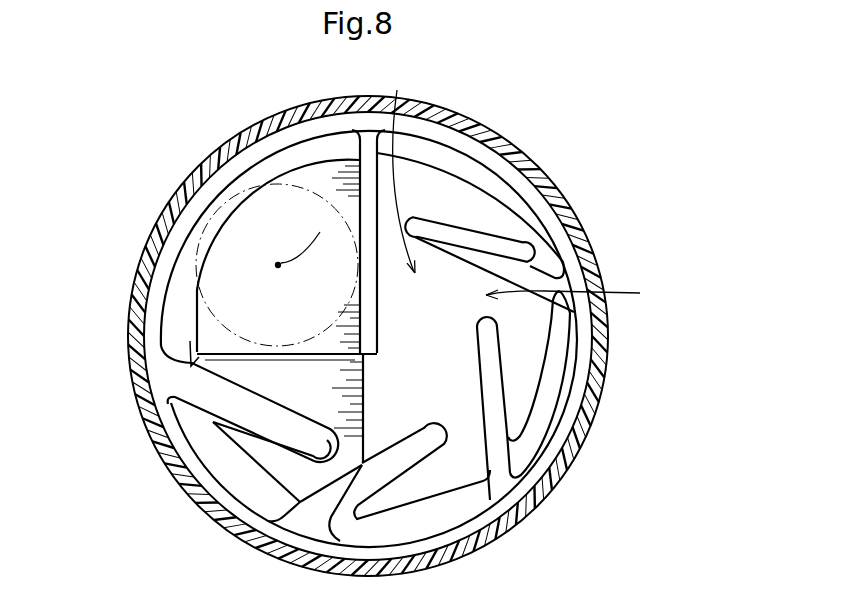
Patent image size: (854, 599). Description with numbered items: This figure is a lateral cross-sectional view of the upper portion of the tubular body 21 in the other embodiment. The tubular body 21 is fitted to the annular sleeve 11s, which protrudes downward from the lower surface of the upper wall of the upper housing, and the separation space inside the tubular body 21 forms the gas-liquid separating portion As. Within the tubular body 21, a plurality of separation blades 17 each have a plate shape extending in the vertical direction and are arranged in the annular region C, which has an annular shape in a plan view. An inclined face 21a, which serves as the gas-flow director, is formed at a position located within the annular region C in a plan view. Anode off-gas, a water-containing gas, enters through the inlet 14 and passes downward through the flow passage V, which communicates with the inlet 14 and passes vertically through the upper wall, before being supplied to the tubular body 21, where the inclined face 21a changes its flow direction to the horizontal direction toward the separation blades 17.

The sleeve 11s is at (588, 253).
The tubular body 21 is at (582, 371).
The inclined face 21a is at (243, 302).
The inlet 14 is at (205, 236).
The separation blades 17 is at (457, 243).
The annular region C is at (401, 167).
The flow passage V is at (301, 238).
The gas-liquid separating portion As is at (577, 293).